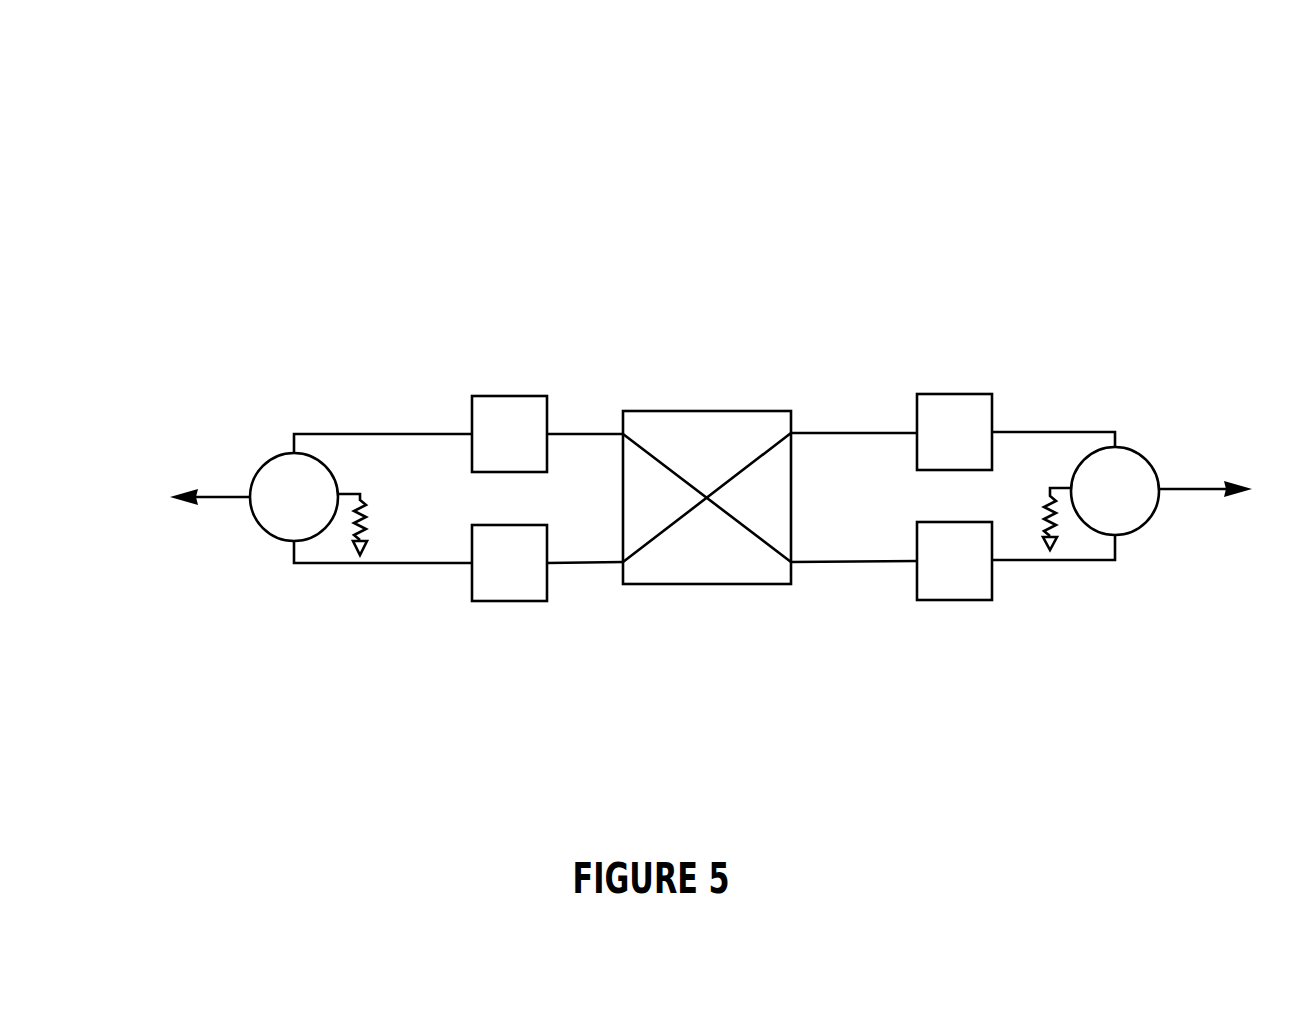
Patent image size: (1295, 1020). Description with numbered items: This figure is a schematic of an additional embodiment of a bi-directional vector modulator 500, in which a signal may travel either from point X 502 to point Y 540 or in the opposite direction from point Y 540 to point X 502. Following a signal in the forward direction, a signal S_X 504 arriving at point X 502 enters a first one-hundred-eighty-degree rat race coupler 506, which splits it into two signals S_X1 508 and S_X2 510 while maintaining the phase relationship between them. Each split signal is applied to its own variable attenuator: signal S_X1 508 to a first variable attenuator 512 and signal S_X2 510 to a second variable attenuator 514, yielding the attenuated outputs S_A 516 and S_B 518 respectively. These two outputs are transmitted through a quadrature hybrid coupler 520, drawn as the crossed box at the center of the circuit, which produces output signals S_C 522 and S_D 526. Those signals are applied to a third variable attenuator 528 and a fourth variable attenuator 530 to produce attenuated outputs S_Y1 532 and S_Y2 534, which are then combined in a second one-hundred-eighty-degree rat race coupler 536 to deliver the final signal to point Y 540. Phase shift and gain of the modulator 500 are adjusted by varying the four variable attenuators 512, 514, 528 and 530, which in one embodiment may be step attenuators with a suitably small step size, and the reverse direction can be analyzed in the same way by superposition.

The bi-directional vector modulator 500 is at (332, 226).
The point X 502 is at (193, 510).
The signal S_X 504 is at (252, 488).
The 180-degree rat race coupler RC1 506 is at (254, 512).
The signal S_X1 508 is at (412, 432).
The signal S_X2 510 is at (412, 568).
The variable attenuator VA1 512 is at (532, 396).
The variable attenuator VA2 514 is at (537, 601).
The attenuated output S_A 516 is at (598, 432).
The attenuated output S_B 518 is at (612, 564).
The quadrature hybrid coupler 520 is at (708, 586).
The signal S_C 522 is at (862, 433).
The signal S_D 526 is at (887, 560).
The variable attenuator VA3 528 is at (964, 393).
The variable attenuator VA4 530 is at (970, 600).
The attenuated output S_Y1 532 is at (1018, 432).
The attenuated output S_Y2 534 is at (1017, 562).
The 180-degree rat race coupler RC2 536 is at (1158, 508).
The point Y 540 is at (1222, 499).